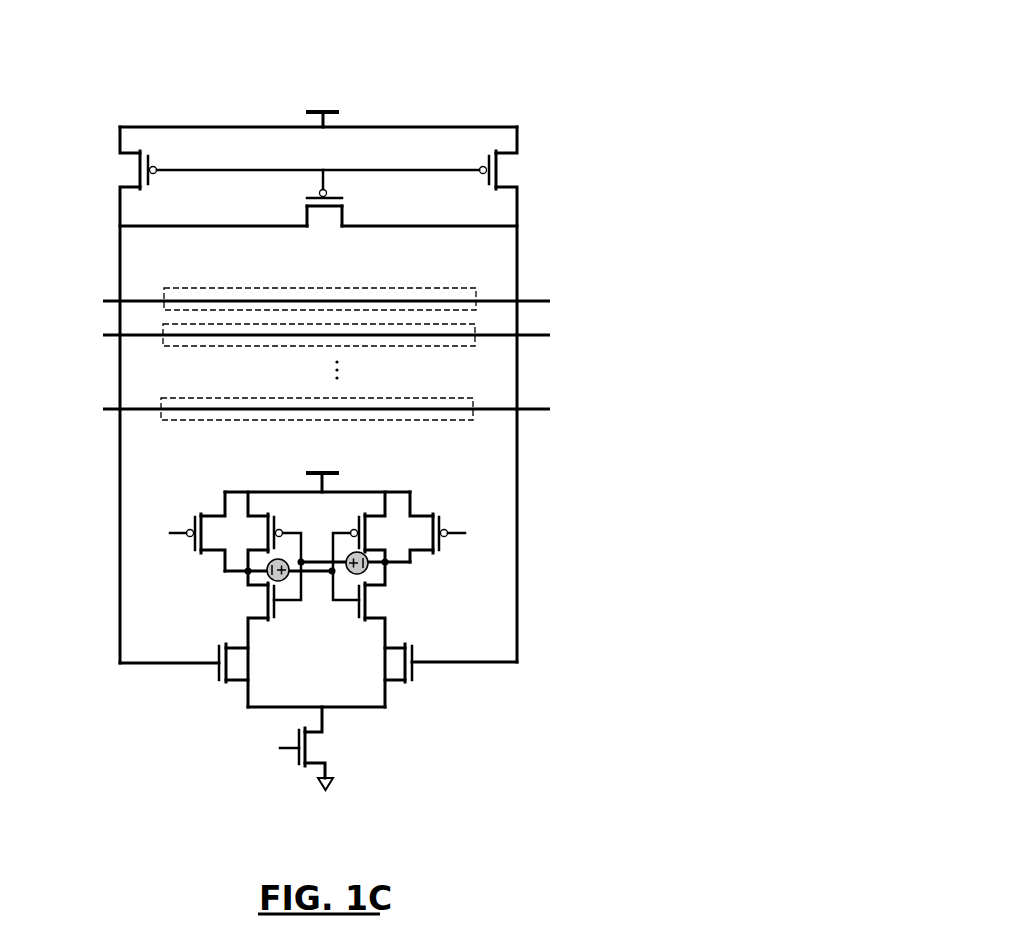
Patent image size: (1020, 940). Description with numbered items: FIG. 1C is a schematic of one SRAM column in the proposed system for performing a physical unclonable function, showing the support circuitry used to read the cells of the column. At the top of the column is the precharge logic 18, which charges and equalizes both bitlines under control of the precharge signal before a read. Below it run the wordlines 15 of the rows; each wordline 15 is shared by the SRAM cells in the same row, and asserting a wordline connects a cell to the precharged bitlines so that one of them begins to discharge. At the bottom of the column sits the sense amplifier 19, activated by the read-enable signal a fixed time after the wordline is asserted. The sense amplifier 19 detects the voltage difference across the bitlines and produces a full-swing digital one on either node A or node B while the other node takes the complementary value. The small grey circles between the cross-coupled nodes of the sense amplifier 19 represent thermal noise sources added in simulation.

The precharge logic 18 is at (575, 82).
The wordline 15 is at (560, 295).
The sense amplifier 19 is at (222, 715).